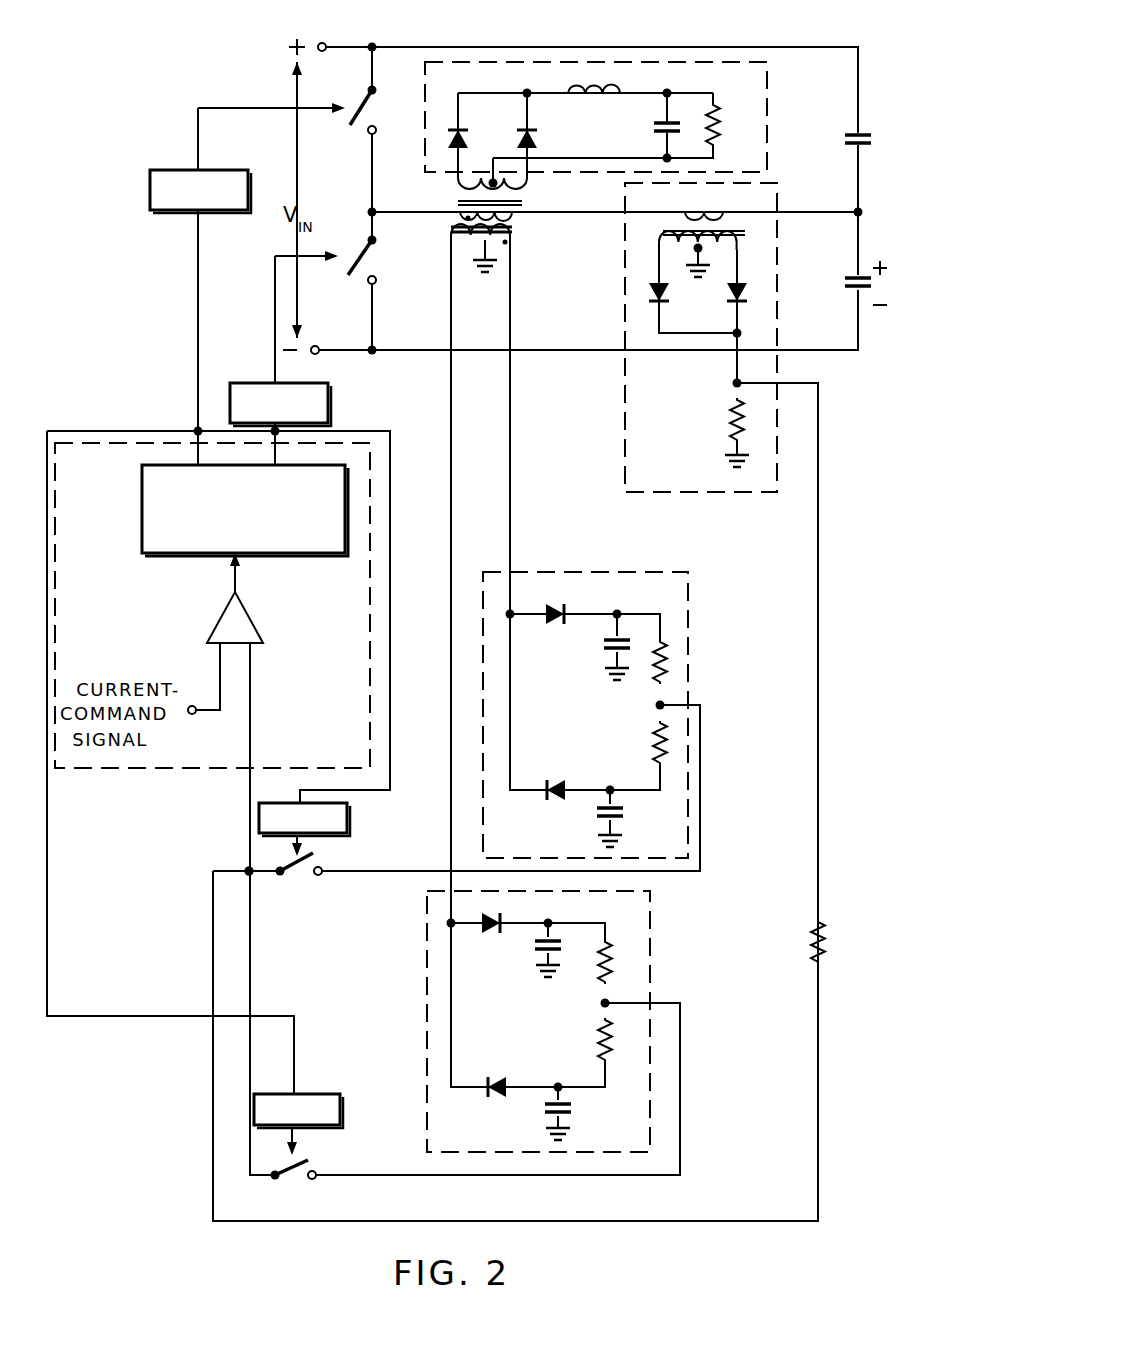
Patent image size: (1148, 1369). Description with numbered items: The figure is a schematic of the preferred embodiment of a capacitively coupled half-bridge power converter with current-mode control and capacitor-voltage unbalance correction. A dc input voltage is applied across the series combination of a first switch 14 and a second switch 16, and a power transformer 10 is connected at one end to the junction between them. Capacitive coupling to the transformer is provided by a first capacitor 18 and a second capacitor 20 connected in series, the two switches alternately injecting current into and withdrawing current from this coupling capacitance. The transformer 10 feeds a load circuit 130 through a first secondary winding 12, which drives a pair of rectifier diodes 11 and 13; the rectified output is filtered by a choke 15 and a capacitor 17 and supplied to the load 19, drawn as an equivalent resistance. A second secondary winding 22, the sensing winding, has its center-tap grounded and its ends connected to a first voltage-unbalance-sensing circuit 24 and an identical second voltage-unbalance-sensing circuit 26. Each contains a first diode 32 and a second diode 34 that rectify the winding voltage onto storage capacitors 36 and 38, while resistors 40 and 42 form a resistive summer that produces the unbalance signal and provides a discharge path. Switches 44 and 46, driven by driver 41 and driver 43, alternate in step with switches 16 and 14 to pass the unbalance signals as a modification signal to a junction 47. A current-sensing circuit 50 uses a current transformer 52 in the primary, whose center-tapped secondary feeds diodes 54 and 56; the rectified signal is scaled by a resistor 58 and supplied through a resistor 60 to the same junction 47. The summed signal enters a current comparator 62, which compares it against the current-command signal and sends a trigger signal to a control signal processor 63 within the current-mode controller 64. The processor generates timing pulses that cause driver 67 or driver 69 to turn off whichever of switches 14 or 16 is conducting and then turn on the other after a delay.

The power transformer 10 is at (502, 197).
The rectifier diode 11 is at (440, 152).
The first secondary winding 12 is at (448, 176).
The rectifier diode 13 is at (516, 138).
The first switch 14 is at (375, 110).
The choke 15 is at (590, 100).
The second switch 16 is at (375, 260).
The capacitor 17 is at (655, 132).
The first capacitor 18 is at (866, 131).
The load 19 is at (722, 120).
The second capacitor 20 is at (850, 294).
The second secondary winding 22 is at (513, 262).
The first voltage-unbalance-sensing circuit 24 is at (596, 572).
The second voltage-unbalance-sensing circuit 26 is at (427, 1088).
The first diode 32 is at (555, 612).
The second diode 34 is at (556, 780).
The storage capacitor 36 is at (608, 648).
The storage capacitor 38 is at (620, 820).
The resistor 40 is at (672, 652).
The driver 41 is at (349, 822).
The resistor 42 is at (655, 740).
The driver 43 is at (315, 1094).
The switch 44 is at (298, 875).
The switch 46 is at (292, 1180).
The junction 47 is at (246, 868).
The current-sensing circuit 50 is at (780, 182).
The current transformer 52 is at (758, 243).
The diode 54 is at (748, 292).
The diode 56 is at (666, 290).
The resistor 58 is at (730, 416).
The resistor 60 is at (826, 954).
The current comparator 62 is at (224, 610).
The control signal processor 63 is at (283, 556).
The current-mode controller 64 is at (162, 768).
The driver 67 is at (176, 168).
The driver 69 is at (257, 382).
The load circuit 130 is at (770, 66).